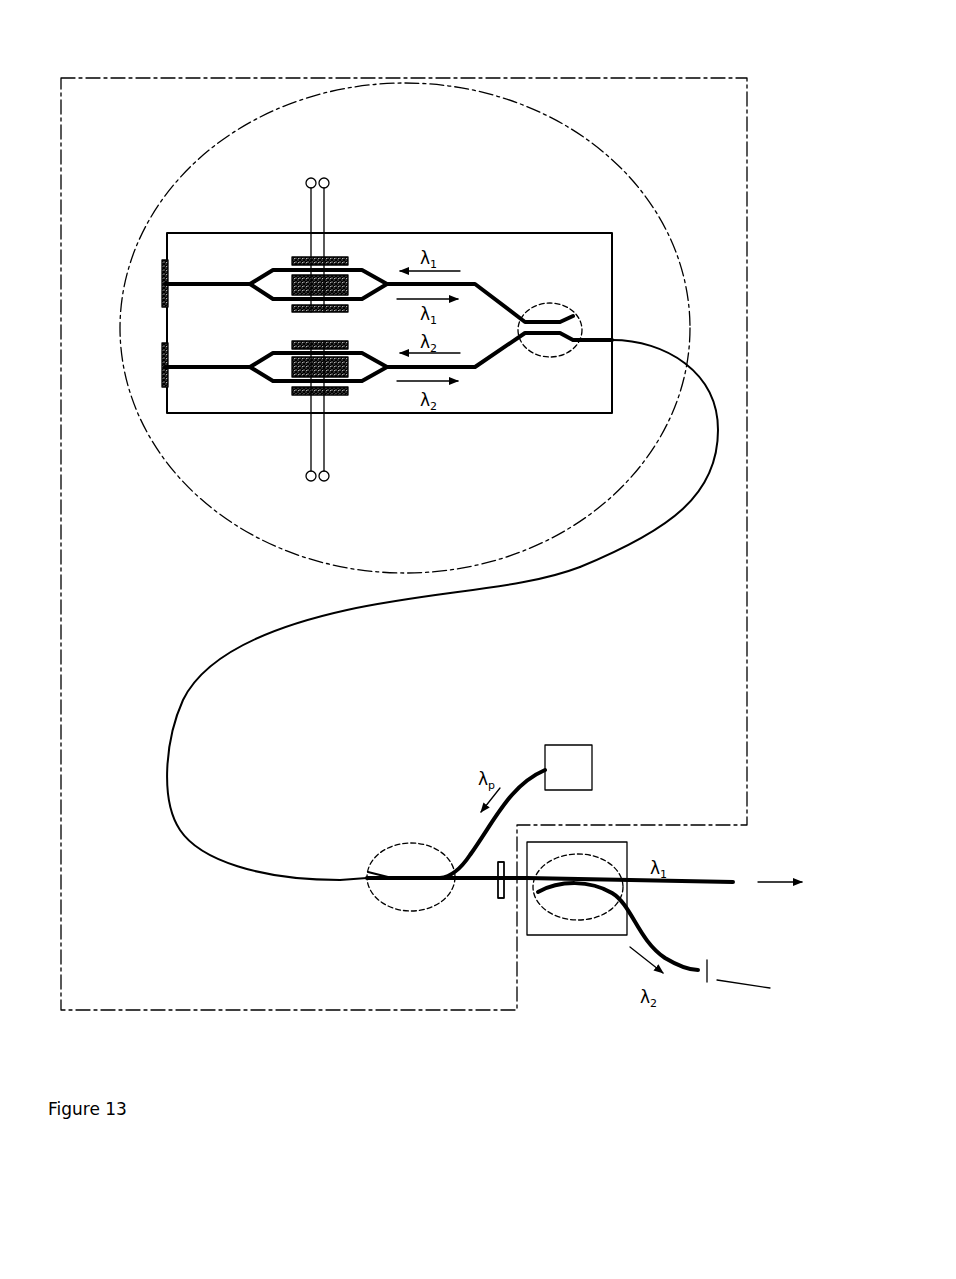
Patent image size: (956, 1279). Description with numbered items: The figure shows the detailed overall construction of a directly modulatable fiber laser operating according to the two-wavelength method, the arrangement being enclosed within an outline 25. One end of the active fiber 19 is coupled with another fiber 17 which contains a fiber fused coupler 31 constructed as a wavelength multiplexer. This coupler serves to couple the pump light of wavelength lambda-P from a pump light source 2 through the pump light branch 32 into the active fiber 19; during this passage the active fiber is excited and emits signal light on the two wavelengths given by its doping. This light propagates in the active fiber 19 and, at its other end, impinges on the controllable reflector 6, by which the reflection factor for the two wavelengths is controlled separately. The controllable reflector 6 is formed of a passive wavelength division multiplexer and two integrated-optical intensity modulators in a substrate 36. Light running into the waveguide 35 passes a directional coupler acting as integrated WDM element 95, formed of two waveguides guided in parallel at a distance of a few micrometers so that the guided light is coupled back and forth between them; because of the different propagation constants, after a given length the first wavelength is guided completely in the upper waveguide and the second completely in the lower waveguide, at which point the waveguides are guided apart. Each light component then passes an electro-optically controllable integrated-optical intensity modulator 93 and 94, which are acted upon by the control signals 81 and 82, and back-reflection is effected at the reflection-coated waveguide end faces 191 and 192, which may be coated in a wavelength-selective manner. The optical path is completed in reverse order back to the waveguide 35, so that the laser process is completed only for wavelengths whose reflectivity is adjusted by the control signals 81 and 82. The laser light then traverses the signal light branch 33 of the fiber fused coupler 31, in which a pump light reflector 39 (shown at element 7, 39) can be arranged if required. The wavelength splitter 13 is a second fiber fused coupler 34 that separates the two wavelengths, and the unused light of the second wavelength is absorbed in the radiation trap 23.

The housing / enclosure 25 is at (672, 77).
The controllable reflector 6 is at (607, 160).
The substrate 36 is at (389, 323).
The reflection-coated waveguide end face 191 is at (165, 282).
The reflection-coated waveguide end face 192 is at (165, 368).
The integrated-optical intensity modulator 94 is at (348, 268).
The integrated-optical intensity modulator 93 is at (350, 385).
The control signal 81 is at (318, 230).
The control signal 82 is at (318, 426).
The integrated WDM element 95 is at (568, 310).
The waveguide 35 is at (600, 340).
The active fiber 19 is at (348, 610).
The fiber 17 is at (352, 880).
The fiber fused coupler 31 is at (400, 913).
The signal light branch 33 is at (478, 882).
The pump light source 2 is at (583, 745).
The pump light branch 32 is at (460, 858).
The optical element / filter 7 is at (503, 900).
The pump light reflector 39 is at (487, 970).
The wavelength splitter 13 is at (613, 840).
The second fiber fused coupler 34 is at (568, 920).
The radiation trap 23 is at (754, 983).